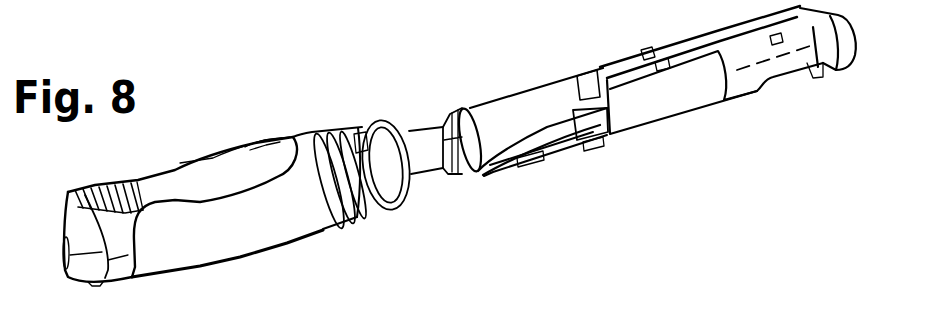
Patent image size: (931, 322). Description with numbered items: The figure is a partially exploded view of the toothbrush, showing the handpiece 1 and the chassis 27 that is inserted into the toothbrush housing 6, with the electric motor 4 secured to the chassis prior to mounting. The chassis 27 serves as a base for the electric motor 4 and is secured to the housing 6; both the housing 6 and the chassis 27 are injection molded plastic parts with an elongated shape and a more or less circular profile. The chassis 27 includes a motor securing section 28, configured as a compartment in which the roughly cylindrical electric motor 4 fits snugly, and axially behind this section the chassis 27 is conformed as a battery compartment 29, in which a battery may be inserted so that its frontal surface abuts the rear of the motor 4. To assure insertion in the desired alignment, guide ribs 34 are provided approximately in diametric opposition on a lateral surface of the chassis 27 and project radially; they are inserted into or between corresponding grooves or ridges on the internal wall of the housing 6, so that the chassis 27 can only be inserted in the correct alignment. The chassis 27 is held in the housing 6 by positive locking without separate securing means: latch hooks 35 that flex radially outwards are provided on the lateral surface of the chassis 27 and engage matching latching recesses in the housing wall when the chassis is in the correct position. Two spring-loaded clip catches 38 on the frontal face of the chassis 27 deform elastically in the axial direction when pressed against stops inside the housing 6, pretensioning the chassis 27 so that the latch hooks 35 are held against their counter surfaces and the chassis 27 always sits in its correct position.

The handpiece 1 is at (236, 135).
The electric motor 4 is at (515, 108).
The housing 6 is at (323, 223).
The chassis 27 is at (633, 143).
The motor securing section 28 is at (490, 165).
The battery compartment 29 is at (707, 87).
The guide ribs 34 is at (578, 146).
The latch hooks 35 is at (635, 55).
The clip catches 38 is at (447, 165).